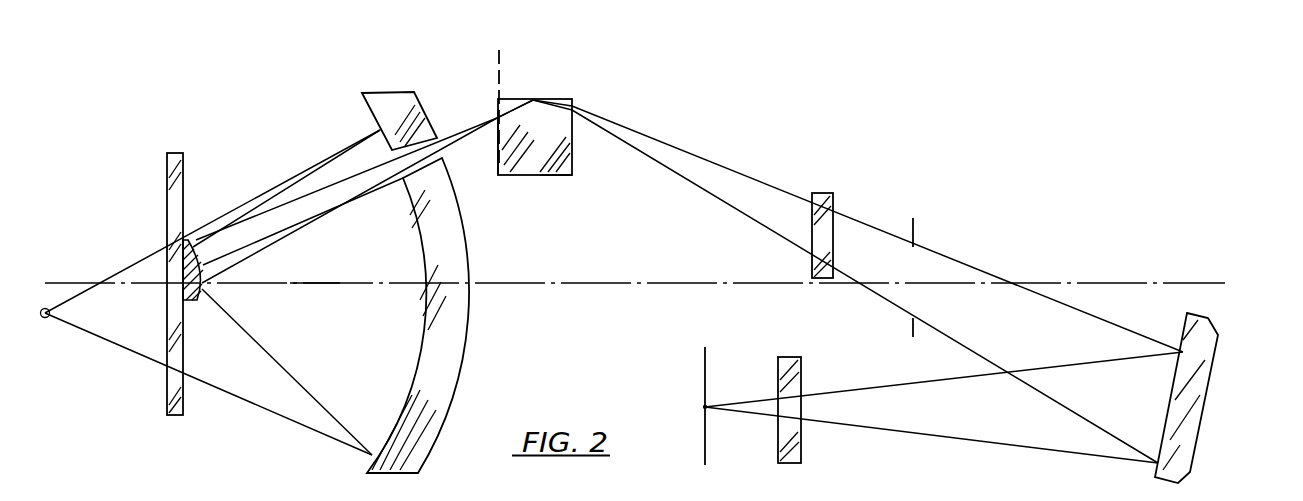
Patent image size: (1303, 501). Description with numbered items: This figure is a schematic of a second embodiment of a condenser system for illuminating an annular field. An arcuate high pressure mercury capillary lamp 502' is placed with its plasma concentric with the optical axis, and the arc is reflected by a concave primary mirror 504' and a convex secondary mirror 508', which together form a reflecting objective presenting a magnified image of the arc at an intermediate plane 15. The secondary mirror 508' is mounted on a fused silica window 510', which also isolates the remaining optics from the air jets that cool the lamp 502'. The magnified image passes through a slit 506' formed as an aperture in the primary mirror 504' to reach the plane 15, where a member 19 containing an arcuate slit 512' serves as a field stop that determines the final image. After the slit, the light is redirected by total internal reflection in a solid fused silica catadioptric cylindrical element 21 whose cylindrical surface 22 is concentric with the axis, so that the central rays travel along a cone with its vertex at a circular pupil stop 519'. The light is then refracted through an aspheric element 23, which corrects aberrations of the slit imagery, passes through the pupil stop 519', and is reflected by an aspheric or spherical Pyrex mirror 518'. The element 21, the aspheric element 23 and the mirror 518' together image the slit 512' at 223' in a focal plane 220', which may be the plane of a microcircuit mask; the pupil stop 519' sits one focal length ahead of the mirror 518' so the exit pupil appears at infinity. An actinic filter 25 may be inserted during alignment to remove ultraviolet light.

The high pressure mercury capillary lamp 502' is at (60, 349).
The window 510' is at (211, 301).
The convex secondary mirror 508' is at (263, 269).
The concave primary mirror 504' is at (399, 315).
The slit 506' is at (413, 109).
The plane 15 is at (499, 70).
The cylindrical surface 22 is at (572, 103).
The catadioptric cylindrical element 21 is at (572, 153).
The member 19 is at (497, 170).
The arcuate slit 512' is at (501, 165).
The aspheric element 23 is at (833, 200).
The circular pupil stop 519' is at (956, 274).
The focal plane 220' is at (669, 391).
The slit image 223' is at (653, 383).
The actinic filter 25 is at (801, 378).
The aspheric or spherical mirror 518' is at (1153, 398).